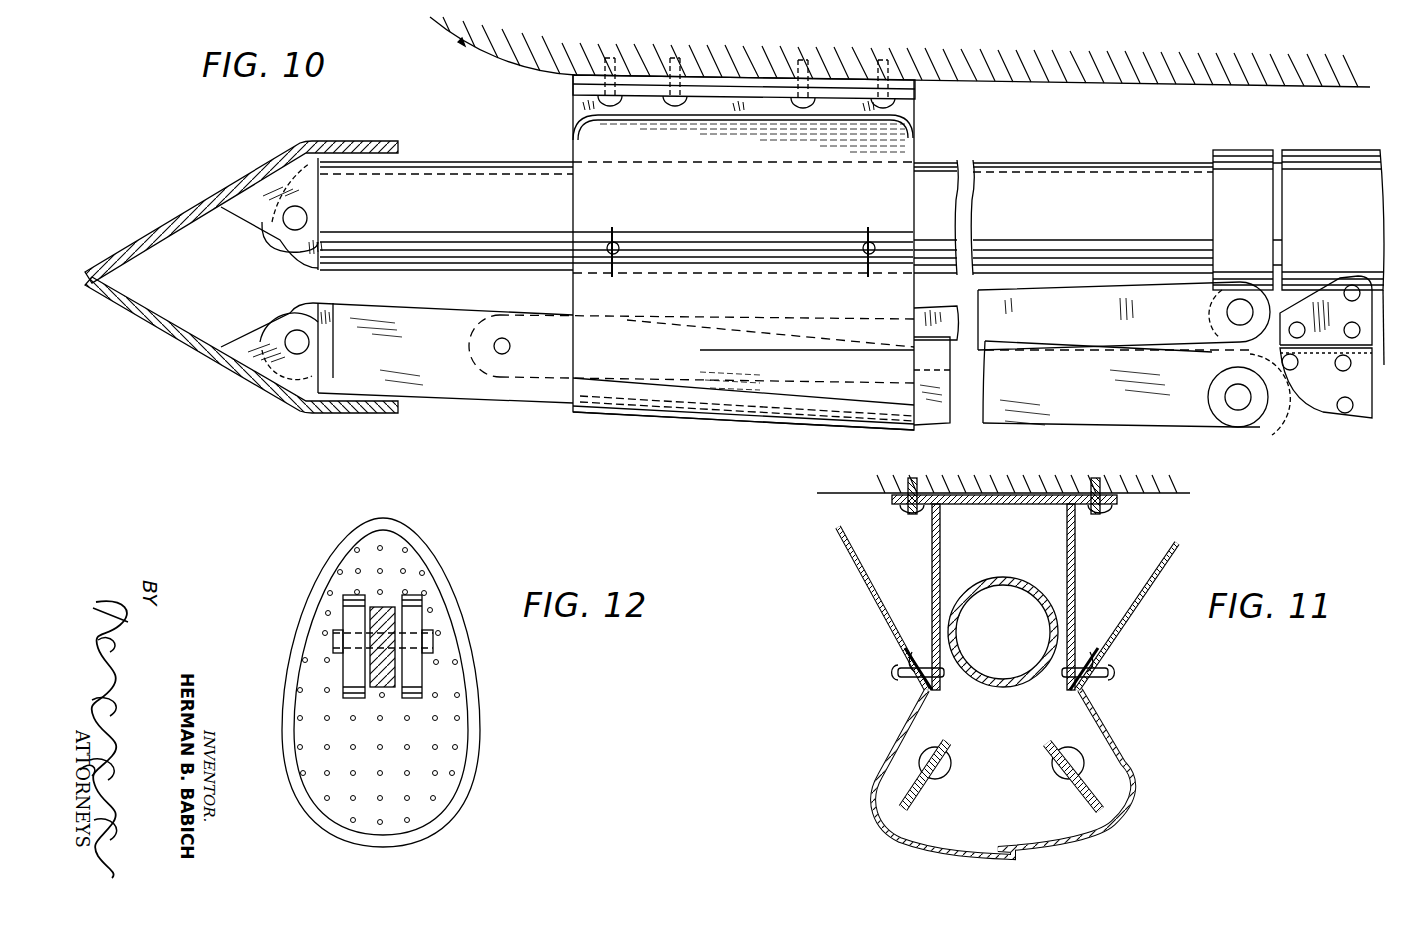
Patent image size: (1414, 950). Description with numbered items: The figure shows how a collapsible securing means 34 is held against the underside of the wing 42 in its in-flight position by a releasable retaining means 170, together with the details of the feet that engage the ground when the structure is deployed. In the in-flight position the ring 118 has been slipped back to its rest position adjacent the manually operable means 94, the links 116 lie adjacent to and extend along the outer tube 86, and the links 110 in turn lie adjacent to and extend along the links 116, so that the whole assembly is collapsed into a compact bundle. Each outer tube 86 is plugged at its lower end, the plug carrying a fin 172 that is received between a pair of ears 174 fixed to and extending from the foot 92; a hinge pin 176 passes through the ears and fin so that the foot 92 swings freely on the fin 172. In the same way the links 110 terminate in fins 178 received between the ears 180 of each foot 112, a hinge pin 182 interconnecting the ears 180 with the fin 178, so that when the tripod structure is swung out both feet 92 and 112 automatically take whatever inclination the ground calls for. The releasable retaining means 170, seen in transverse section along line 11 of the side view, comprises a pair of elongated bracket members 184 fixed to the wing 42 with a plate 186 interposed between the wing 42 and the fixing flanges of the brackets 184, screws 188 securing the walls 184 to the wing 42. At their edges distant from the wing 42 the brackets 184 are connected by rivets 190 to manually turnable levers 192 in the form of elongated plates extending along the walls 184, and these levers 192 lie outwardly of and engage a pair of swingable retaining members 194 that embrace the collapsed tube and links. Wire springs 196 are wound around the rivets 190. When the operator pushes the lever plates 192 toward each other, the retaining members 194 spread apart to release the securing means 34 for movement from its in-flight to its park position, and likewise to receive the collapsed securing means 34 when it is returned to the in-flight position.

In FIG. 10, the section line 11— 11 is at (610, 5).
In FIG. 10, the securing means 34 is at (1330, 436).
In FIG. 10, the wing 42 is at (1064, 70).
In FIG. 11, the wing 42 is at (1123, 505).
In FIG. 10, the outer tube 86 is at (1094, 213).
In FIG. 11, the outer tube 86 is at (1030, 575).
In FIG. 10, the foot 92 is at (223, 197).
In FIG. 12, the foot 92 is at (462, 705).
In FIG. 10, the manually operable means 94 is at (1330, 150).
In FIG. 10, the links 110 is at (1045, 405).
In FIG. 11, the links 110 is at (912, 812).
In FIG. 10, the foot 112 is at (180, 340).
In FIG. 10, the links 116 is at (1062, 328).
In FIG. 11, the links 116 is at (1044, 747).
In FIG. 10, the ring 118 is at (1252, 134).
In FIG. 10, the releasable retaining means 170 is at (571, 415).
In FIG. 10, the fin 172 is at (283, 253).
In FIG. 12, the ears 174 is at (417, 614).
In FIG. 12, the hinge pin 176 is at (430, 645).
In FIG. 10, the fins 178 is at (327, 310).
In FIG. 10, the ears 180 is at (253, 340).
In FIG. 10, the hinge pin 182 is at (292, 350).
In FIG. 11, the bracket members 184 is at (1076, 578).
In FIG. 10, the plate 186 is at (573, 80).
In FIG. 11, the plate 186 is at (977, 504).
In FIG. 10, the screws 188 is at (803, 60).
In FIG. 11, the screws 188 is at (1098, 480).
In FIG. 11, the rivets 190 is at (1102, 672).
In FIG. 10, the levers 192 is at (766, 158).
In FIG. 11, the levers 192 is at (880, 615).
In FIG. 11, the retaining members 194 is at (1115, 752).
In FIG. 10, the wire springs 196 is at (866, 228).
In FIG. 11, the wire springs 196 is at (1100, 695).